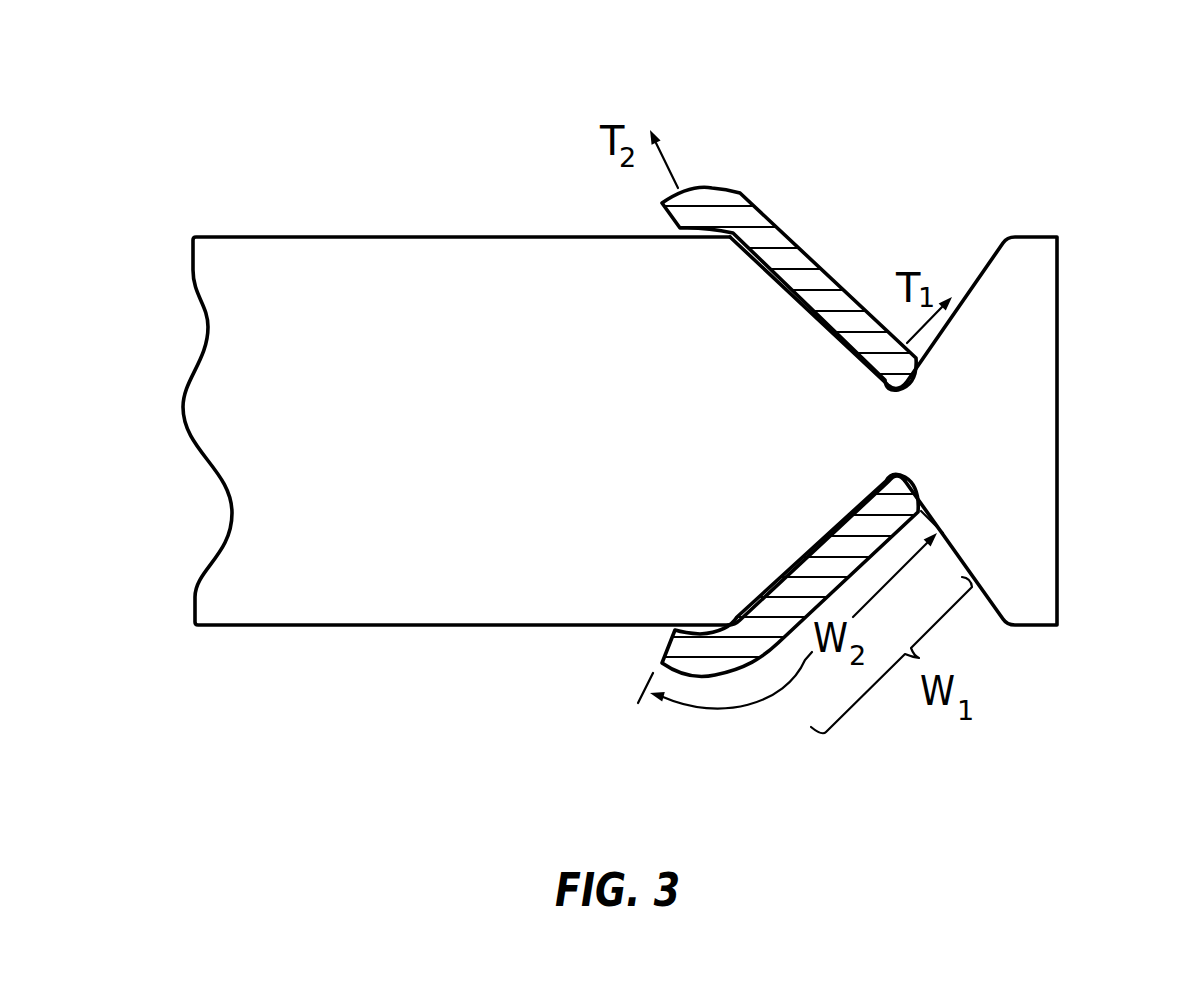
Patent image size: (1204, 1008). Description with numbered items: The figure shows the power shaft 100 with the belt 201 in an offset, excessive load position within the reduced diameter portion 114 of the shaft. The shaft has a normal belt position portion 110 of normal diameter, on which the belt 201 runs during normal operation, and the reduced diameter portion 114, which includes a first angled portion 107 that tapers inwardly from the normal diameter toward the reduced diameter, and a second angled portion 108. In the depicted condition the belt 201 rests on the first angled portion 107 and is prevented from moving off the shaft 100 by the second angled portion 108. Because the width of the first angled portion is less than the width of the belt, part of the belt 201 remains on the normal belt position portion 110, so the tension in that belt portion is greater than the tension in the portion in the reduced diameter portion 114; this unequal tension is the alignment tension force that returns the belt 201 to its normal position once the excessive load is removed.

The power shaft 100 is at (676, 428).
The normal belt position portion 110 is at (193, 88).
The reduced diameter portion 114 is at (923, 339).
The first angled portion 107 is at (820, 312).
The second angled portion 108 is at (956, 292).
The belt 201 is at (821, 260).